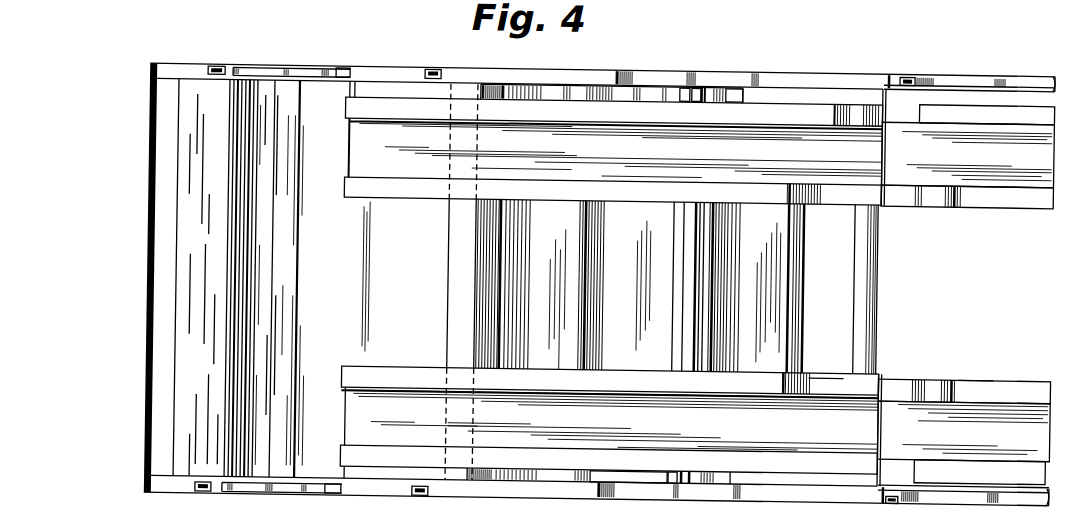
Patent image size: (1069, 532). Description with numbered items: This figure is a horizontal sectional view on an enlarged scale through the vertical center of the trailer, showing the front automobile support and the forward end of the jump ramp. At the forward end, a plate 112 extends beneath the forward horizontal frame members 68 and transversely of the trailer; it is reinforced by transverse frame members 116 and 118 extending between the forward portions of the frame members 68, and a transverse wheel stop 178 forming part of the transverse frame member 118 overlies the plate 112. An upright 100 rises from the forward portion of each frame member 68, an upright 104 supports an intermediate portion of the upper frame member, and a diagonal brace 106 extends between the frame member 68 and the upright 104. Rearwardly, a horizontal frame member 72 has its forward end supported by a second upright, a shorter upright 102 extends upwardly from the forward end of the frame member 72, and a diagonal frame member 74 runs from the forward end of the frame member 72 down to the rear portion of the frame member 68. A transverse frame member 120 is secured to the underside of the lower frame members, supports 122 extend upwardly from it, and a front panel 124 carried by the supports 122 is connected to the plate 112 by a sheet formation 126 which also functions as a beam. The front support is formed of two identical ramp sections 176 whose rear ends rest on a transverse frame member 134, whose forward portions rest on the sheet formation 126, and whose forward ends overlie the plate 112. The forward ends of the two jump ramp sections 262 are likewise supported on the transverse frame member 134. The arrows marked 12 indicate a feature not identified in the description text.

The joint between beam and end block 12 is at (828, 367).
The forward horizontal frame member 68 is at (572, 78).
The horizontal frame member 72 is at (1000, 69).
The diagonal frame member 74 is at (784, 55).
The upright 100 is at (224, 53).
The shorter upright 102 is at (917, 57).
The upright 104 is at (440, 52).
The diagonal brace 106 is at (310, 54).
The plate 112 is at (156, 339).
The transverse frame member 116 is at (190, 298).
The transverse frame member 118 is at (261, 332).
The transverse frame member 120 is at (700, 480).
The supports 122 is at (644, 61).
The front panel 124 is at (548, 483).
The sheet formation 126 is at (455, 295).
The transverse frame member 134 is at (870, 269).
The ramp sections 176 is at (397, 193).
The transverse wheel stop 178 is at (285, 267).
The jump ramp sections 262 is at (999, 197).